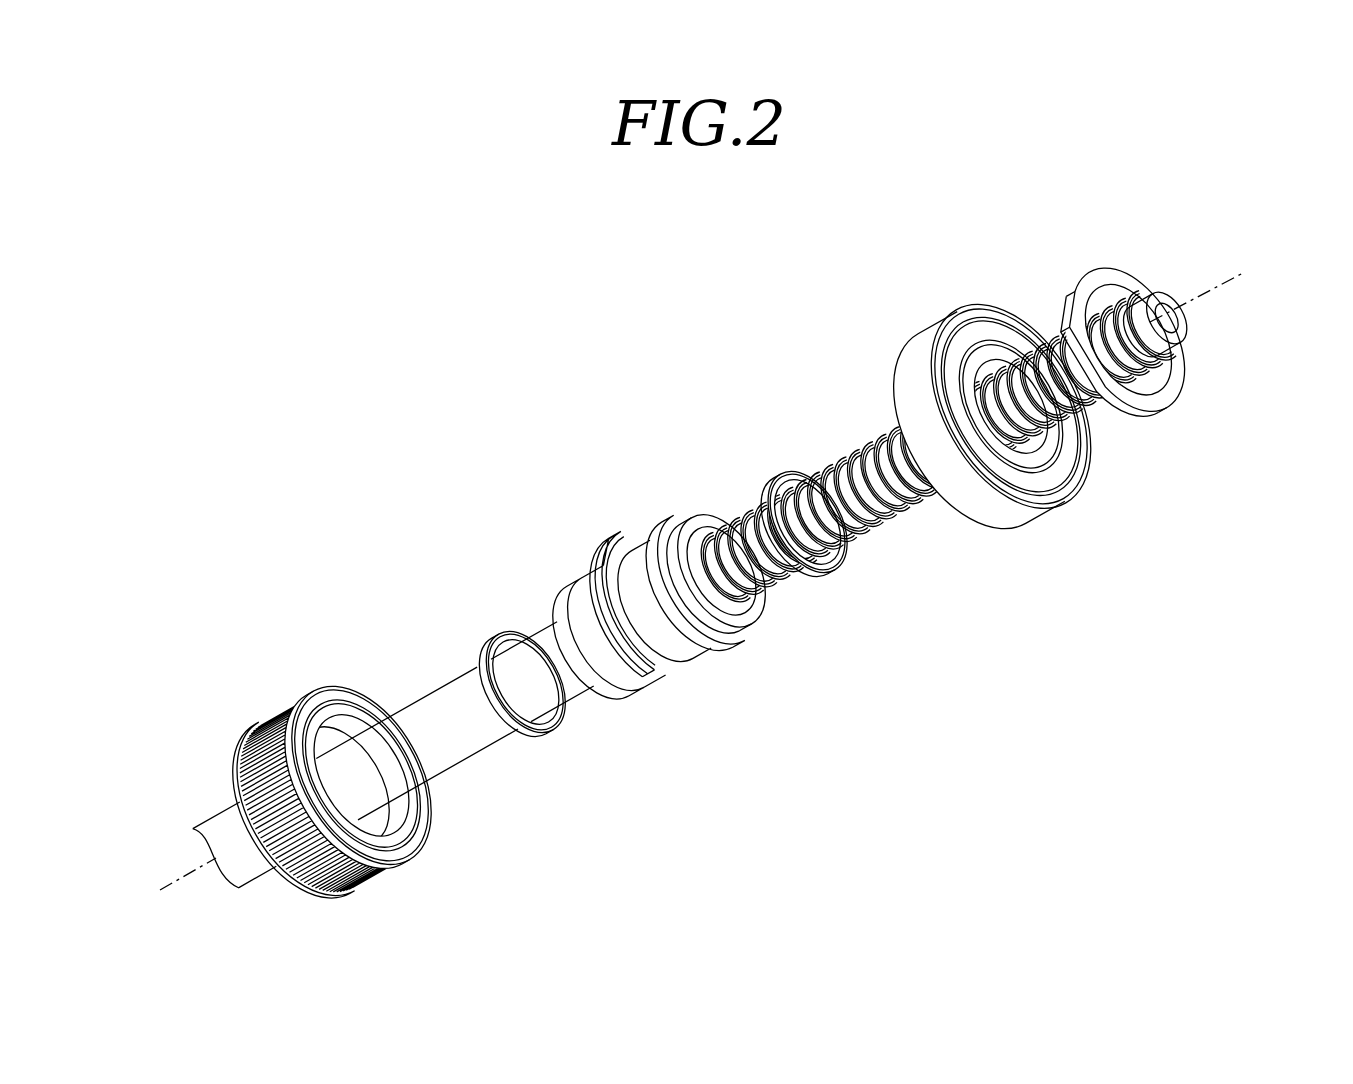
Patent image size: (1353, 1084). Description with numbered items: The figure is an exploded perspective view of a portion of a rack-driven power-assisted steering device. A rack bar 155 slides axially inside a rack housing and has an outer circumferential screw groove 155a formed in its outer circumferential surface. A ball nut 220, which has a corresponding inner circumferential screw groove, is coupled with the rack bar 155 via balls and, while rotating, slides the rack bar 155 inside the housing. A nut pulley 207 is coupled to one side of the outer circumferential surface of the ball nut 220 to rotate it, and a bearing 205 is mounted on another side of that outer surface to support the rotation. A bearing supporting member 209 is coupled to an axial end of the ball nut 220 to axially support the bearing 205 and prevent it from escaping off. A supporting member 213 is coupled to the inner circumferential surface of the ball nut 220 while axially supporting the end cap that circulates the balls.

The rack bar 155 is at (497, 727).
The outer circumferential screw groove 155a is at (763, 574).
The bearing 205 is at (926, 286).
The nut pulley 207 is at (278, 683).
The bearing supporting member 209 is at (1061, 232).
The supporting member 213 is at (480, 617).
The ball nut 220 is at (598, 507).